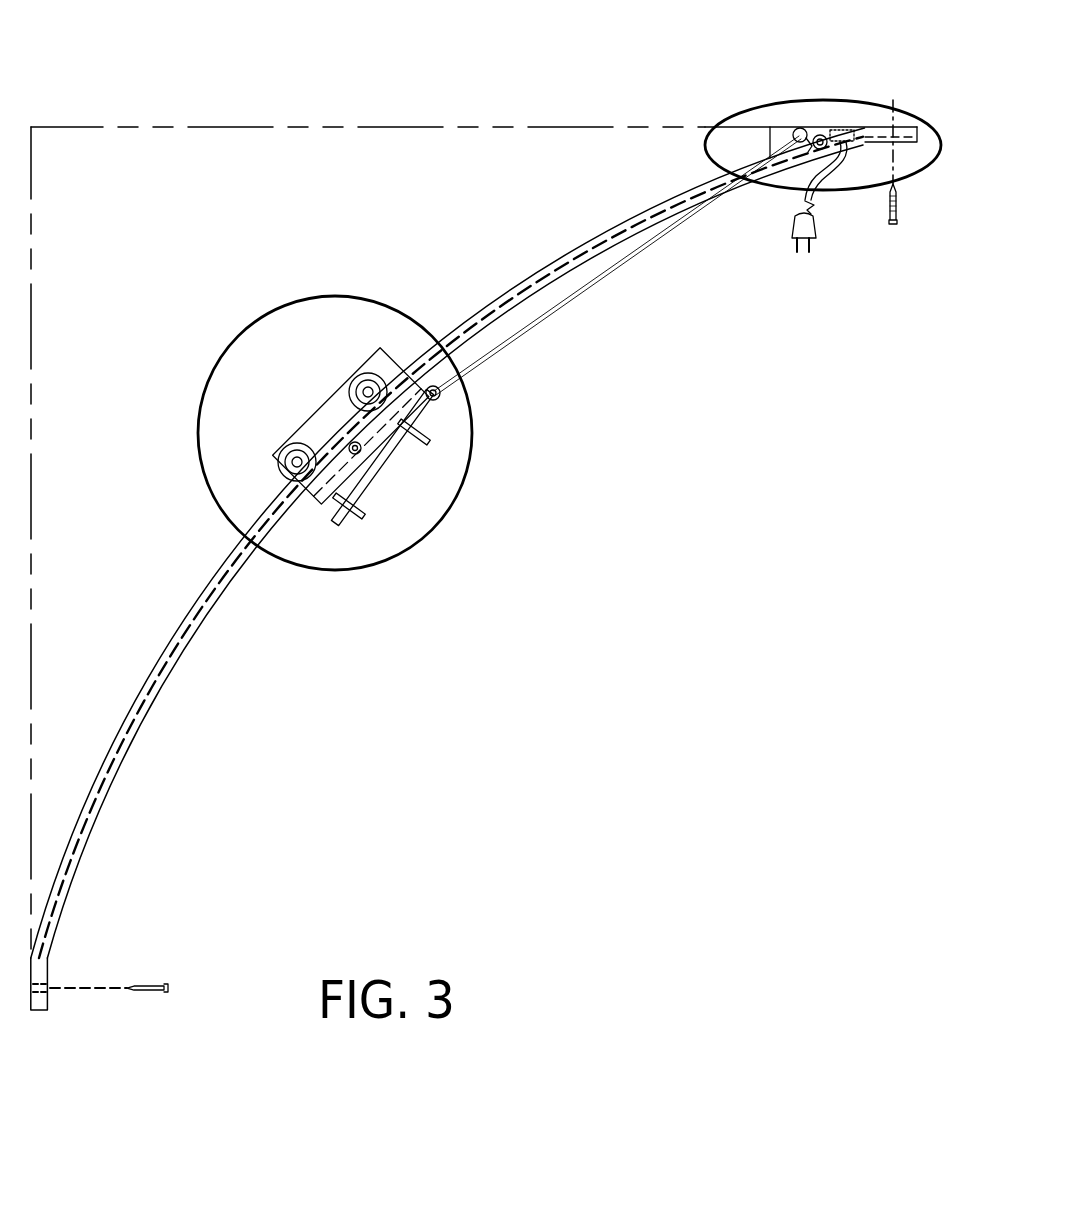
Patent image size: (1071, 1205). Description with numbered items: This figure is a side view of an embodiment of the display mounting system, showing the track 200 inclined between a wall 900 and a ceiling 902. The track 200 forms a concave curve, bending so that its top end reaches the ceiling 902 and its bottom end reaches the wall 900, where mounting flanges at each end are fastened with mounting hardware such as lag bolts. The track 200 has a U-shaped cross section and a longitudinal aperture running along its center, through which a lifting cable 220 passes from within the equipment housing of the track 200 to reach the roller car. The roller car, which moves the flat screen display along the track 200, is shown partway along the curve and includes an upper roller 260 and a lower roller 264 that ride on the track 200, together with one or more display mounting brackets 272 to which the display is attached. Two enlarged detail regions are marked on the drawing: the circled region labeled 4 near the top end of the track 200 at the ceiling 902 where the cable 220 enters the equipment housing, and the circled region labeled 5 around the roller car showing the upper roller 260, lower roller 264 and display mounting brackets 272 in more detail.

The ceiling 902 is at (227, 127).
The wall 900 is at (32, 557).
The track 200 is at (512, 293).
The lifting cable 220 is at (555, 308).
The upper roller 260 is at (363, 372).
The lower roller 264 is at (278, 453).
The display mounting bracket 272 is at (420, 444).
The detail region shown in FIG. 4 is at (705, 145).
The detail region shown in FIG. 5 is at (462, 473).